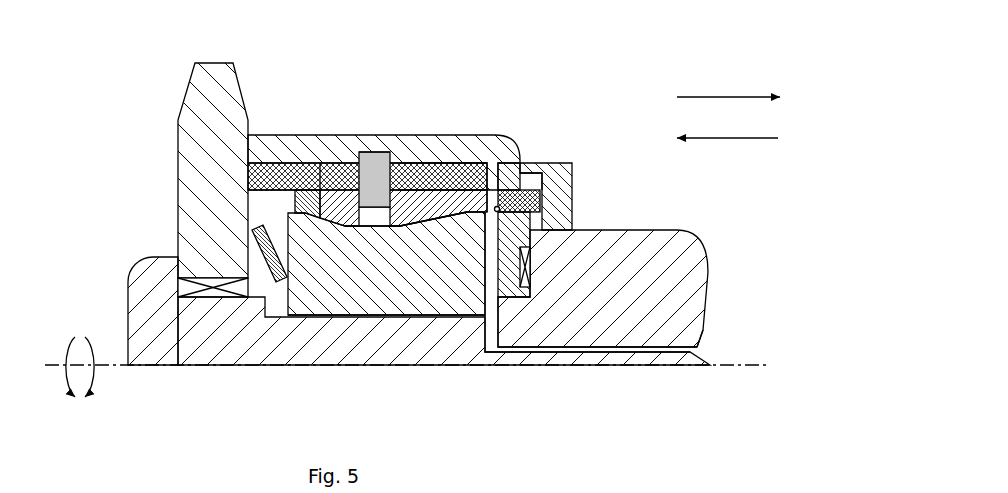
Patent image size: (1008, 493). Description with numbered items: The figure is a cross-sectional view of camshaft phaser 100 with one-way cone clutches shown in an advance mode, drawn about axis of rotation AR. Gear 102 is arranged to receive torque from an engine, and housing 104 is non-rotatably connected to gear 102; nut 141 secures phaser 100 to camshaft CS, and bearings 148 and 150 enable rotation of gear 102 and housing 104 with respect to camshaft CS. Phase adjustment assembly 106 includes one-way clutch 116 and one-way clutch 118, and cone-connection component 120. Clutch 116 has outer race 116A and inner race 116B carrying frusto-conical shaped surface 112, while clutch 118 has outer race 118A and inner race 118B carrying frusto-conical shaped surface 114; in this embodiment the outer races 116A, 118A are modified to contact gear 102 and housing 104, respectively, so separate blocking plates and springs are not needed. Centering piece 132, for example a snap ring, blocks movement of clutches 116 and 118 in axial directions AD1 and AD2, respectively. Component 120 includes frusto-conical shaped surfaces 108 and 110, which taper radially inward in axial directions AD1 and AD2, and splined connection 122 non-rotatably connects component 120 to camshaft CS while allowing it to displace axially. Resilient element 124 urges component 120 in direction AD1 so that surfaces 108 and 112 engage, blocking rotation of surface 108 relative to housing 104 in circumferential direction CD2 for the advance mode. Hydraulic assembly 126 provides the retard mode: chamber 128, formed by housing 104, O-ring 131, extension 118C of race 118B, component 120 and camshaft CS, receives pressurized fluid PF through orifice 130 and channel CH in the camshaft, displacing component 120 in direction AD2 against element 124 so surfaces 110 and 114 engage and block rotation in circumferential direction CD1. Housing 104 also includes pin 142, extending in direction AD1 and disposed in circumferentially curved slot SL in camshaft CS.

The camshaft phaser 100 is at (640, 70).
The gear 102 is at (212, 63).
The housing 104 is at (428, 132).
The phase adjustment assembly 106 is at (445, 338).
The frusto-conical shaped surface 108 is at (347, 222).
The frusto-conical shaped surface 110 is at (435, 218).
The frusto-conical shaped surface 112 is at (323, 188).
The frusto-conical shaped surface 114 is at (432, 192).
The one-way clutch 116 is at (345, 158).
The outer race 116A is at (312, 180).
The inner race 116B is at (303, 191).
The one-way clutch 118 is at (410, 158).
The outer race 118A is at (428, 178).
The inner race 118B is at (400, 228).
The extension 118C is at (483, 235).
The cone-connection component 120 is at (377, 218).
The splined connection 122 is at (368, 322).
The resilient element 124 is at (265, 258).
The hydraulic assembly 126 is at (512, 238).
The chamber 128 is at (488, 257).
The orifice 130 is at (493, 300).
The O-ring 131 is at (500, 209).
The centering piece 132 is at (385, 152).
The nut 141 is at (128, 293).
The pin 142 is at (533, 173).
The bearing 148 is at (183, 288).
The bearing 150 is at (531, 277).
The axial direction AD1 is at (708, 97).
The axial direction AD2 is at (727, 138).
The axis of rotation AR is at (752, 365).
The circumferential direction CD1 is at (95, 383).
The circumferential direction CD2 is at (67, 355).
The channel CH is at (612, 343).
The camshaft CS is at (678, 230).
The pressurized fluid PF is at (708, 348).
The slot SL is at (541, 198).